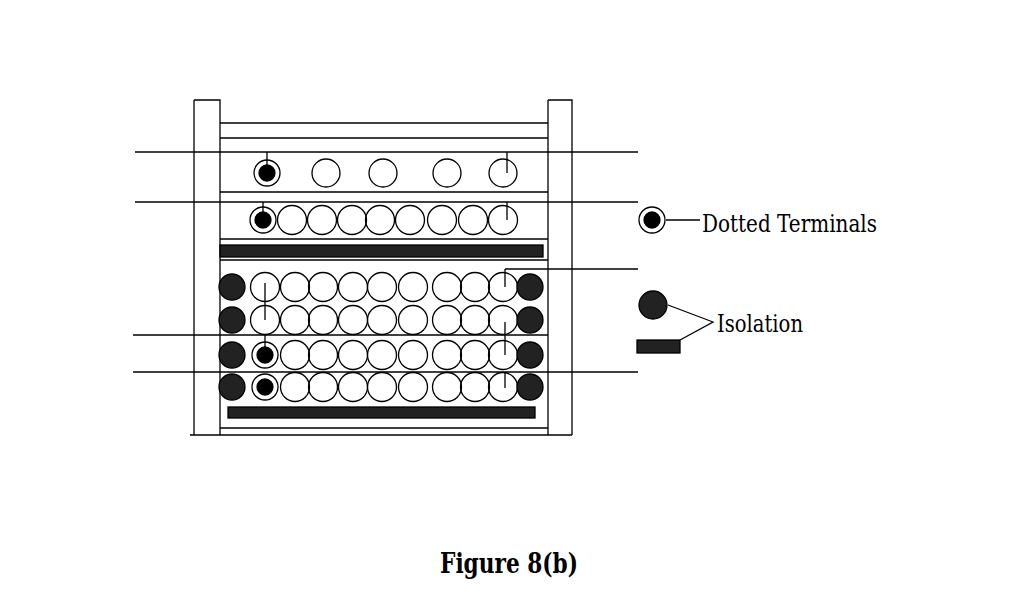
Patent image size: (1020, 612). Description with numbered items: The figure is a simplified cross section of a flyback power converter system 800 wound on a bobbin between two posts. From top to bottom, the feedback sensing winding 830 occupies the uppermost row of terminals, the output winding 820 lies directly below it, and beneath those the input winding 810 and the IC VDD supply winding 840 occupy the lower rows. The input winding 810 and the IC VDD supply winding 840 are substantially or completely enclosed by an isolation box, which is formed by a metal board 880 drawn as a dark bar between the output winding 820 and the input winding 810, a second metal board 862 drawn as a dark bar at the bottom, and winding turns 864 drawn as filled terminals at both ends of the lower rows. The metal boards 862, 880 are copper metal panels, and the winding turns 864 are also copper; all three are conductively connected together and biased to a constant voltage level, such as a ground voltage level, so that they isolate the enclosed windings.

The flyback power converter system 800 is at (72, 33).
The feedback sensing winding 830 is at (152, 152).
The output winding 820 is at (143, 201).
The metal board 880 is at (547, 251).
The input winding 810 is at (138, 338).
The IC VDD supply winding 840 is at (142, 364).
The winding turns 864 is at (222, 395).
The metal board 862 is at (491, 420).